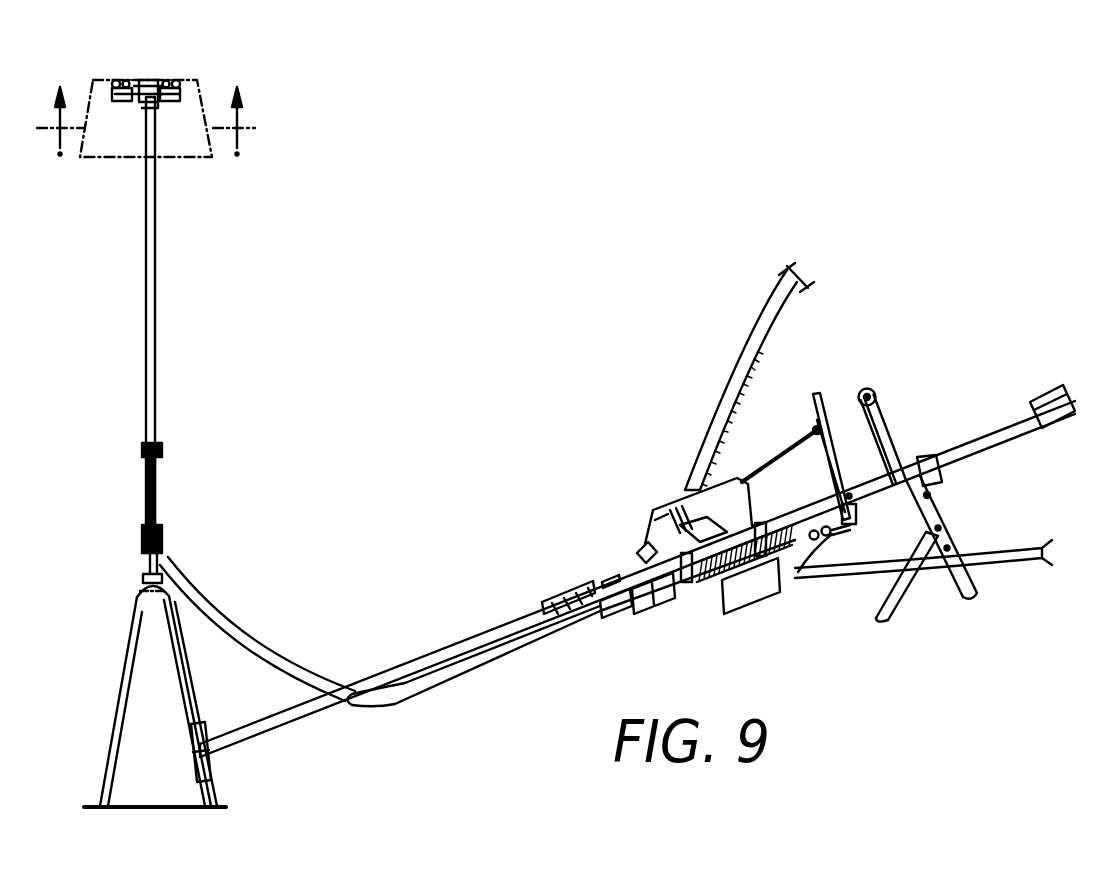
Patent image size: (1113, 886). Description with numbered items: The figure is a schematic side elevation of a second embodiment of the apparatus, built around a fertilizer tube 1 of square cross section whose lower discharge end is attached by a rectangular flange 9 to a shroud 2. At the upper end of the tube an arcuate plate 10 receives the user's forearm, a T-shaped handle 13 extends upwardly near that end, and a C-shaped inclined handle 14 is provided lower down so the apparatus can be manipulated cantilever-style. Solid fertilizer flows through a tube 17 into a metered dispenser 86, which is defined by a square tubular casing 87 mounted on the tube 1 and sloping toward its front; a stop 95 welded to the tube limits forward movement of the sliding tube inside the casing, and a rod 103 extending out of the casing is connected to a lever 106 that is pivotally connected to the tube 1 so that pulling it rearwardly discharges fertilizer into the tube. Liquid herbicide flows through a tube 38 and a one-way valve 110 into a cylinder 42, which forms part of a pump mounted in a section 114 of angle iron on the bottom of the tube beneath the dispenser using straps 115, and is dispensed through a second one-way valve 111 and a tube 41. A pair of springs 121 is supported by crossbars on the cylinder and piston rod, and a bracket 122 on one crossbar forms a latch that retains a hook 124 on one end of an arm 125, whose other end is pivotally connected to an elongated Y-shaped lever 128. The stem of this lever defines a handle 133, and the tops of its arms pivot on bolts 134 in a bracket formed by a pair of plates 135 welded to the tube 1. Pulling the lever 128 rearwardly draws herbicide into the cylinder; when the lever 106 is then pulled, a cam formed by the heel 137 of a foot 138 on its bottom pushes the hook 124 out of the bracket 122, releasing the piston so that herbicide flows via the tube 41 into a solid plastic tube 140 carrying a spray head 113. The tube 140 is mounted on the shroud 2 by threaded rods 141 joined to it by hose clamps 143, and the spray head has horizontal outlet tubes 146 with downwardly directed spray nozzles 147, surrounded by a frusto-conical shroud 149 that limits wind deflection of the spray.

The fertilizer tube 1 is at (463, 641).
The shroud 2 is at (185, 675).
The rectangular flange 9 is at (210, 766).
The arcuate plate 10 is at (1045, 400).
The T-shaped handle 13 is at (877, 398).
The inclined handle 14 is at (563, 603).
The tube 17 is at (747, 338).
The tube 38 is at (1003, 560).
The tube 41 is at (396, 708).
The cylinder 42 is at (730, 598).
The metered dispenser 86 is at (661, 493).
The tubular casing 87 is at (660, 512).
The stop 95 is at (610, 576).
The rod 103 is at (800, 437).
The lever 106 is at (822, 394).
The one-way valve 110 is at (772, 596).
The second one-way valve 111 is at (633, 614).
The spray head 113 is at (185, 65).
The section of angle iron 114 is at (606, 622).
The straps 115 is at (648, 548).
The springs 121 is at (693, 594).
The bracket 122 is at (820, 541).
The hook 124 is at (879, 622).
The arm 125 is at (902, 590).
The Y-shaped lever 128 is at (950, 540).
The handle 133 is at (972, 598).
The bolts 134 is at (932, 496).
The plates 135 is at (938, 476).
The heel 137 is at (853, 520).
The foot 138 is at (836, 530).
The solid plastic tube 140 is at (155, 362).
The threaded rods 141 is at (156, 488).
The hose clamps 143 is at (160, 447).
The horizontal outlet tubes 146 is at (146, 82).
The spray nozzles 147 is at (120, 102).
The frusto-conical shroud 149 is at (193, 158).